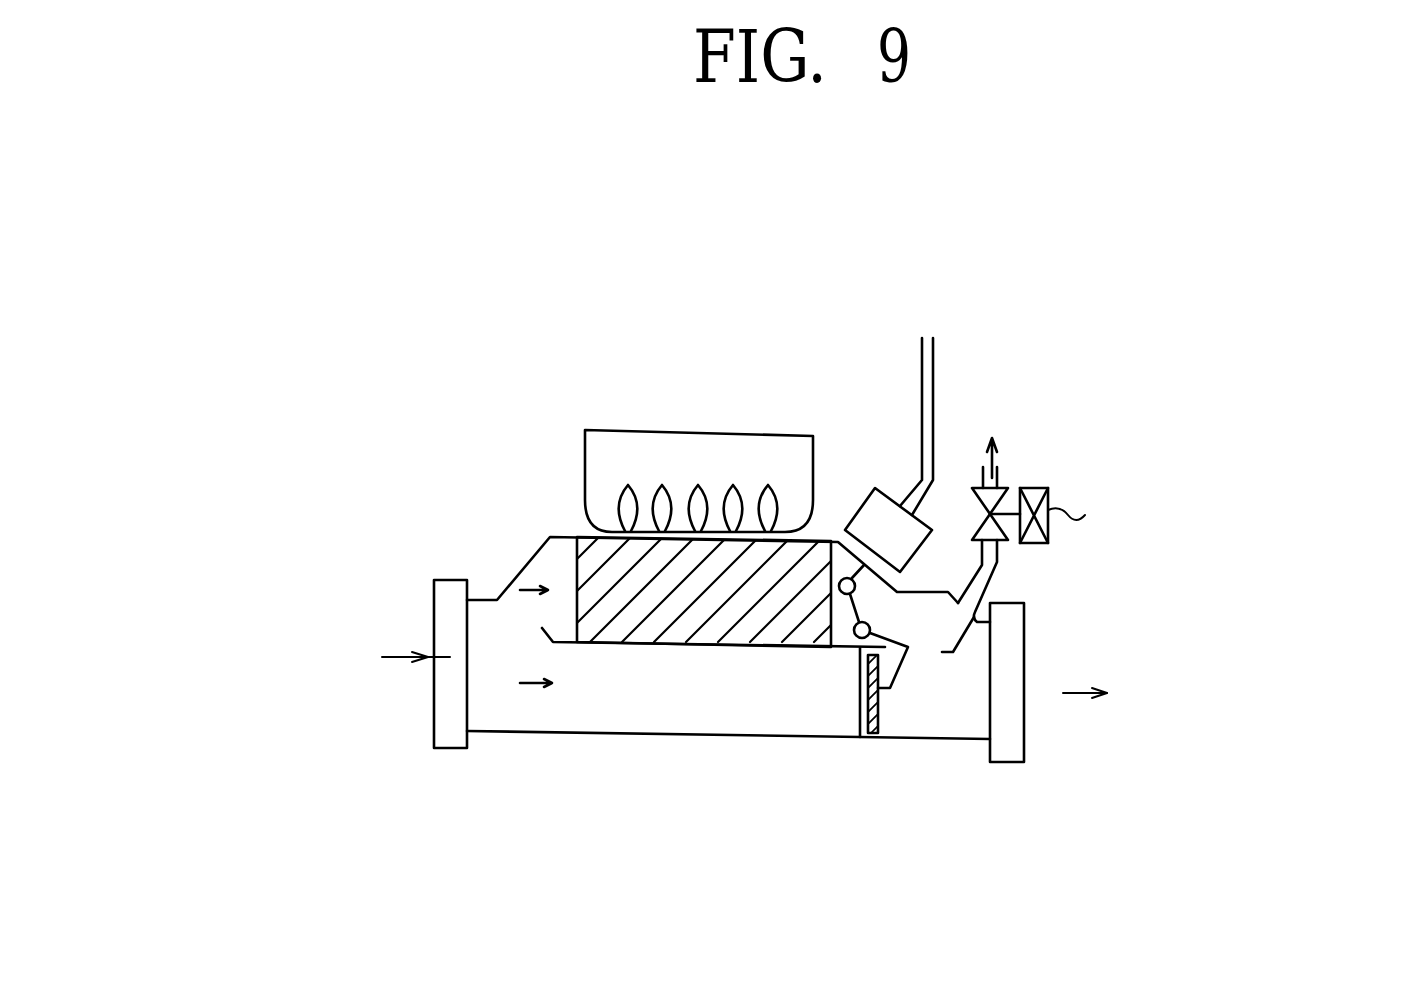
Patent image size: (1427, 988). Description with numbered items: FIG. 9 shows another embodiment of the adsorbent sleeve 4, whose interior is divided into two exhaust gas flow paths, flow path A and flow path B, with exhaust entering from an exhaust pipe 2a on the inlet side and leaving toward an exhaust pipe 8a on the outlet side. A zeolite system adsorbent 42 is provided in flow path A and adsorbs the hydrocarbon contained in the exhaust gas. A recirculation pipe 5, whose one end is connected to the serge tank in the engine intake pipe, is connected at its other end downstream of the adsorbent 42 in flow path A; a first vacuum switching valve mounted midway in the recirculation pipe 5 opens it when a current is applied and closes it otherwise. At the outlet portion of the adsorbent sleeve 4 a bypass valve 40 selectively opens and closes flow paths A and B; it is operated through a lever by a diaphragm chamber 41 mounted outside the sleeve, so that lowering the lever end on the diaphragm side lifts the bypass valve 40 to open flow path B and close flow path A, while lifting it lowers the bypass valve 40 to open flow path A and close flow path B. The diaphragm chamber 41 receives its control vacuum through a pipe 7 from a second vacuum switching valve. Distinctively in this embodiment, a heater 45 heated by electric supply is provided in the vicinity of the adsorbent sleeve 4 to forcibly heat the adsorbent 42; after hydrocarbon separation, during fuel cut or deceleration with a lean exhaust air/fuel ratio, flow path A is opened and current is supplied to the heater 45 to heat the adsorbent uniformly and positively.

The adsorbent sleeve 4 is at (517, 766).
The exhaust pipe (inlet) 2a is at (265, 653).
The exhaust pipe (outlet) 8a is at (1237, 700).
The adsorbent 42 is at (717, 633).
The heater 45 is at (633, 430).
The diaphragm chamber 41 is at (873, 490).
The bypass valve 40 is at (879, 708).
The vacuum pipe to VSV2 7 is at (933, 360).
The recirculation pipe 5 is at (997, 559).